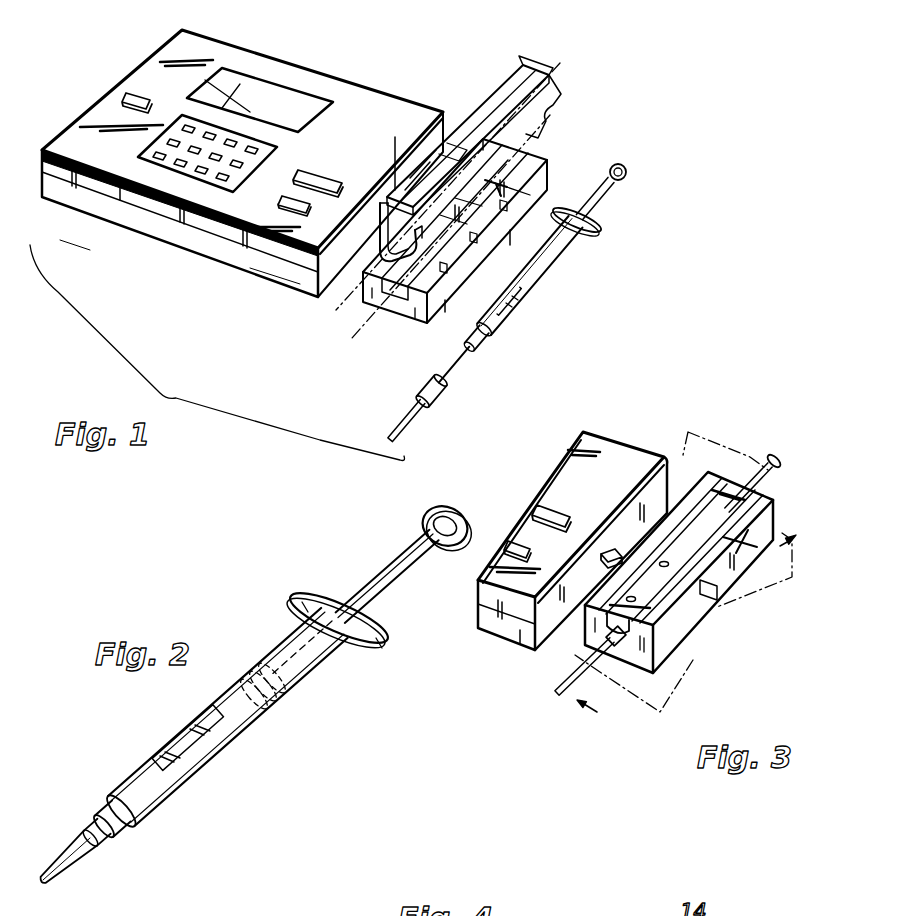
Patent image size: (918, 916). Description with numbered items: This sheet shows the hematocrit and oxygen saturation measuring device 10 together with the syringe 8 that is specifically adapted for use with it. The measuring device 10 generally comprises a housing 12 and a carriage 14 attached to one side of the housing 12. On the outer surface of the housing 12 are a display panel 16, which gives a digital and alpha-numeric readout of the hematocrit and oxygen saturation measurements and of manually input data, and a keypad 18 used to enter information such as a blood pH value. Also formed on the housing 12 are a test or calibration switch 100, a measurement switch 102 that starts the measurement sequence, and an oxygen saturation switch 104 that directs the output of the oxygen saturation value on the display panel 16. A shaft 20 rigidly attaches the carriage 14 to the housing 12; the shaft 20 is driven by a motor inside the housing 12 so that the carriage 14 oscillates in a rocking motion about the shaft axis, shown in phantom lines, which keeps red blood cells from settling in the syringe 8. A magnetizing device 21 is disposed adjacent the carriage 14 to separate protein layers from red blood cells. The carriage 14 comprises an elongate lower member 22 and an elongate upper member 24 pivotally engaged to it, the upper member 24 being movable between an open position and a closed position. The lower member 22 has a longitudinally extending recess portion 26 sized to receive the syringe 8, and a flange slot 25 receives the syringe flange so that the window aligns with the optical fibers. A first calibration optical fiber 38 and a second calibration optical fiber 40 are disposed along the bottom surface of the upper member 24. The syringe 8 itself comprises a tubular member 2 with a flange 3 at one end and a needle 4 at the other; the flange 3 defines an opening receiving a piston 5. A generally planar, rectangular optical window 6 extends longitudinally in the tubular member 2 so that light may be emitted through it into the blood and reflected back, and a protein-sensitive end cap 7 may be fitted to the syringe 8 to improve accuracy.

In FIG. 1, the hematocrit and oxygen saturation measuring device 10 is at (398, 70).
In FIG. 1, the housing 12 is at (152, 60).
In FIG. 3, the housing 12 is at (610, 440).
In FIG. 1, the carriage 14 is at (578, 139).
In FIG. 3, the carriage 14 is at (692, 430).
In FIG. 1, the display panel 16 is at (264, 88).
In FIG. 1, the keypad 18 is at (180, 172).
In FIG. 1, the shaft 20 is at (384, 202).
In FIG. 3, the shaft 20 is at (611, 553).
In FIG. 1, the magnetizing device 21 is at (444, 142).
In FIG. 1, the lower member 22 is at (410, 312).
In FIG. 3, the lower member 22 is at (678, 640).
In FIG. 1, the upper member 24 is at (480, 130).
In FIG. 3, the upper member 24 is at (723, 490).
In FIG. 1, the flange slot 25 is at (503, 195).
In FIG. 1, the recess portion 26 is at (526, 174).
In FIG. 3, the first calibration optical fiber 38 is at (634, 597).
In FIG. 3, the second calibration optical fiber 40 is at (664, 561).
In FIG. 1, the test or calibration switch 100 is at (127, 98).
In FIG. 1, the measurement switch 102 is at (323, 172).
In FIG. 3, the measurement switch 102 is at (546, 513).
In FIG. 1, the oxygen saturation switch 104 is at (283, 207).
In FIG. 3, the oxygen saturation switch 104 is at (520, 543).
In FIG. 1, the tubular member 2 is at (500, 330).
In FIG. 2, the tubular member 2 is at (190, 772).
In FIG. 1, the flange 3 is at (588, 230).
In FIG. 2, the flange 3 is at (363, 648).
In FIG. 1, the needle 4 is at (460, 360).
In FIG. 3, the needle 4 is at (686, 636).
In FIG. 1, the piston 5 is at (604, 196).
In FIG. 2, the piston 5 is at (255, 668).
In FIG. 3, the piston 5 is at (754, 482).
In FIG. 1, the optical window 6 is at (515, 303).
In FIG. 2, the optical window 6 is at (182, 735).
In FIG. 1, the protein-sensitive end cap 7 is at (420, 407).
In FIG. 2, the protein-sensitive end cap 7 is at (80, 862).
In FIG. 3, the protein-sensitive end cap 7 is at (568, 682).
In FIG. 1, the syringe 8 is at (556, 279).
In FIG. 2, the syringe 8 is at (258, 745).